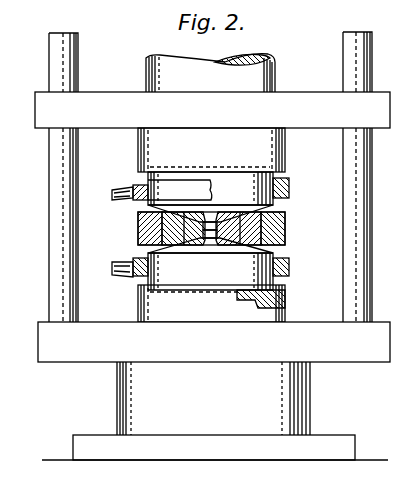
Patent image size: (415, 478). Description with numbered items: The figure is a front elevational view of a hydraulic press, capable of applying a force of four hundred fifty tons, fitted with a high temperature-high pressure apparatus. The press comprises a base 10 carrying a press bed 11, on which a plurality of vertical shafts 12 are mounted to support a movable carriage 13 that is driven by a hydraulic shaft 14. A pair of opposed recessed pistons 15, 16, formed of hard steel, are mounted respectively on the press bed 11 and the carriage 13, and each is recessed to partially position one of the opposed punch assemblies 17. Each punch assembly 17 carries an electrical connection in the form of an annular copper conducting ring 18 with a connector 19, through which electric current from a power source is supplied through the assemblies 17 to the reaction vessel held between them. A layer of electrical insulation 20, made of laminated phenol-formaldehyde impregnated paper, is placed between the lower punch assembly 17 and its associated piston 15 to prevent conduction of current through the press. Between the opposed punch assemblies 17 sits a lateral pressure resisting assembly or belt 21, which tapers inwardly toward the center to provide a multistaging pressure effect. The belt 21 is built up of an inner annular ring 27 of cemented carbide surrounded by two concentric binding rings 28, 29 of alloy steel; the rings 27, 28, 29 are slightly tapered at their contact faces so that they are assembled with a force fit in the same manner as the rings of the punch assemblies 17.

The base 10 is at (150, 402).
The press bed 11 is at (72, 352).
The vertical shafts 12 is at (54, 172).
The movable carriage 13 is at (298, 98).
The hydraulic shaft 14 is at (150, 71).
The lower recessed piston 15 is at (284, 308).
The upper recessed piston 16 is at (285, 142).
The punch assemblies 17 is at (234, 184).
The annular copper conducting ring 18 is at (146, 185).
The connector 19 is at (114, 195).
The layer of electrical insulation 20 is at (258, 309).
The lateral pressure resisting assembly 21 is at (292, 222).
The inner annular ring 27 is at (211, 221).
The inner binding ring 28 is at (173, 228).
The outer binding ring 29 is at (139, 239).